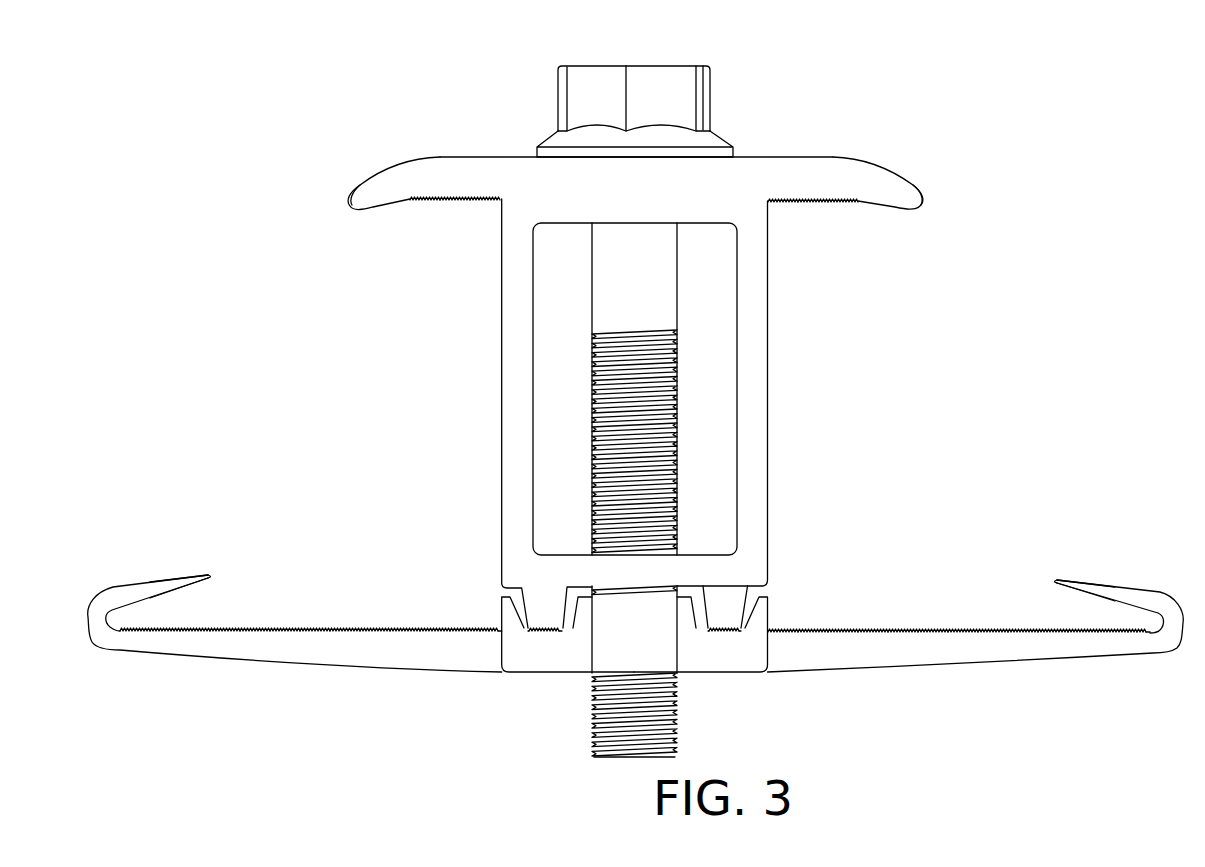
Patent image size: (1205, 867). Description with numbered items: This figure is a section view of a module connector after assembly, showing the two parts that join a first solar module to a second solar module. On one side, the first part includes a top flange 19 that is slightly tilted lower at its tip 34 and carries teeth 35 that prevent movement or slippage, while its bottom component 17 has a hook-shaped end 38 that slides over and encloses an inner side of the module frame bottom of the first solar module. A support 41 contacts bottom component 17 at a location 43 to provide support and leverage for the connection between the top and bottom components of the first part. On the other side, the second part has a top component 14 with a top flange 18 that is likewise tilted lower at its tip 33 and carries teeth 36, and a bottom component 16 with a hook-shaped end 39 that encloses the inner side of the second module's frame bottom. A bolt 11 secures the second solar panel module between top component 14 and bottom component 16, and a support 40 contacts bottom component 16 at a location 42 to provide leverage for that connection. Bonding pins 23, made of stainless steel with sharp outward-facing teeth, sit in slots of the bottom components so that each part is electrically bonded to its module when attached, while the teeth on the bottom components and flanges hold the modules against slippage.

The bolt 11 is at (707, 79).
The top component 14 is at (769, 440).
The bottom component 16 is at (915, 652).
The bottom component 17 is at (302, 652).
The top flange 18 is at (832, 156).
The top flange 19 is at (430, 167).
The bonding pins 23 is at (455, 622).
The tip 33 is at (913, 197).
The tip 34 is at (360, 200).
The teeth 35 is at (452, 203).
The teeth 36 is at (815, 201).
The hook-shaped end 38 is at (204, 575).
The hook-shaped end 39 is at (1060, 578).
The support 40 is at (538, 602).
The support 41 is at (730, 603).
The location 42 is at (540, 632).
The location 43 is at (727, 632).